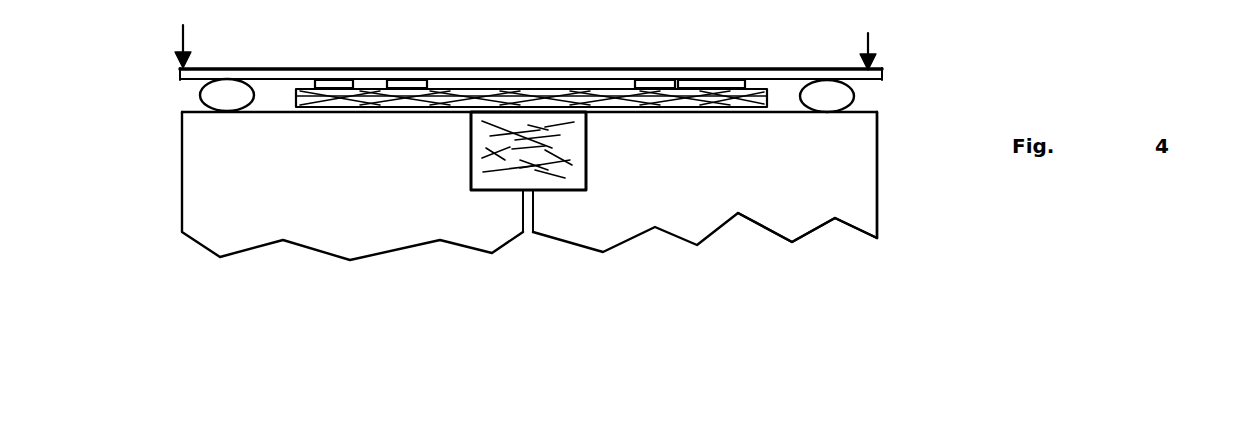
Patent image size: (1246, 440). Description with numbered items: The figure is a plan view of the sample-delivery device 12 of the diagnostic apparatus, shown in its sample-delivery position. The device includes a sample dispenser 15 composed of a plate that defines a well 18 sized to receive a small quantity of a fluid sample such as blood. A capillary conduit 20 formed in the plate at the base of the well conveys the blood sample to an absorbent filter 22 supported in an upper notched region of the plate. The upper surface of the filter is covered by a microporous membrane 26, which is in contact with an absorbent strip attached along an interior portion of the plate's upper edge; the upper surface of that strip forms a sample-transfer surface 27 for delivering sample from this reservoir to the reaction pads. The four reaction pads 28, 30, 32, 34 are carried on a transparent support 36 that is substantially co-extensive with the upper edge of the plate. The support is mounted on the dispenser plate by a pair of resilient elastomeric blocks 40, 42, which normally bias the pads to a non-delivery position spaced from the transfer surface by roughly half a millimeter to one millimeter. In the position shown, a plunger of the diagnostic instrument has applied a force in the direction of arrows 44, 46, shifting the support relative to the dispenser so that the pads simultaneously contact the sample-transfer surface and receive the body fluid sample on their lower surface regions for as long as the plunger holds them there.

The sample-delivery device 12 is at (172, 212).
The sample dispenser 15 is at (862, 174).
The well 18 is at (813, 217).
The capillary conduit 20 is at (535, 212).
The absorbent filter 22 is at (575, 128).
The microporous membrane 26 is at (452, 106).
The sample-transfer surface 27 is at (590, 91).
The reaction pad 28 is at (337, 82).
The reaction pad 30 is at (413, 80).
The reaction pad 32 is at (657, 81).
The reaction pad 34 is at (735, 80).
The transparent support 36 is at (517, 70).
The elastomeric block 40 is at (207, 93).
The elastomeric block 42 is at (833, 97).
The arrow 44 is at (184, 34).
The arrow 46 is at (869, 40).